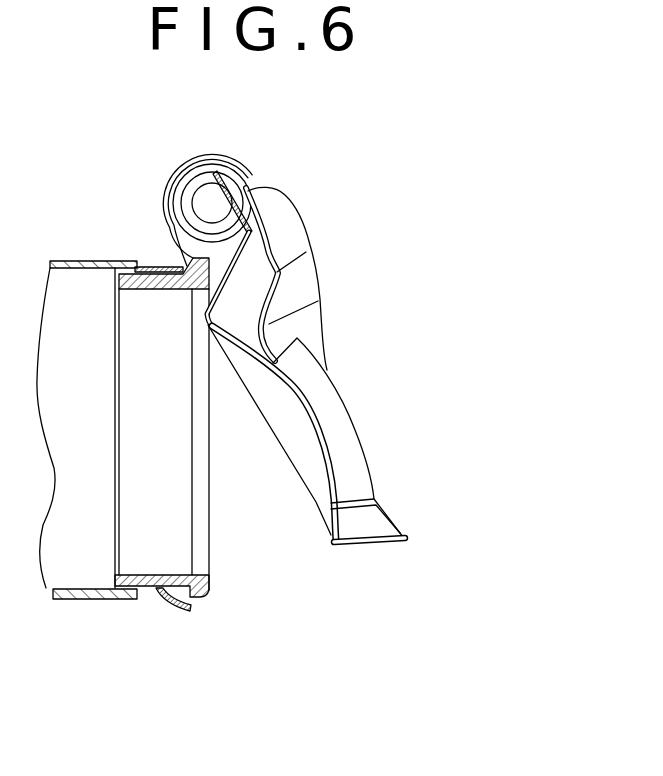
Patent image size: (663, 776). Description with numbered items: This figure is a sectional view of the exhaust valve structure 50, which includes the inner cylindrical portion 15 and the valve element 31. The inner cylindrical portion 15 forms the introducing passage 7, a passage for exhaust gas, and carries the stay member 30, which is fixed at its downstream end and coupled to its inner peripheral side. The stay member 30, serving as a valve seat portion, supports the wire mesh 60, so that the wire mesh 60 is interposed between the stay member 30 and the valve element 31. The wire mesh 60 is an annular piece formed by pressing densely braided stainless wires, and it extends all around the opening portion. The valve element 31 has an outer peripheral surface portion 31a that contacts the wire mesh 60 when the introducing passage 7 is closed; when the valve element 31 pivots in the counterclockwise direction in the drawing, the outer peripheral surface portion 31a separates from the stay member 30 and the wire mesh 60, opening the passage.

The introducing passage 7 is at (86, 287).
The inner cylindrical portion 15 is at (92, 600).
The stay member 30 is at (155, 592).
The valve element 31 is at (359, 484).
The outer peripheral surface portion 31a is at (365, 548).
The exhaust valve structure 50 is at (313, 159).
The wire mesh 60 is at (197, 592).